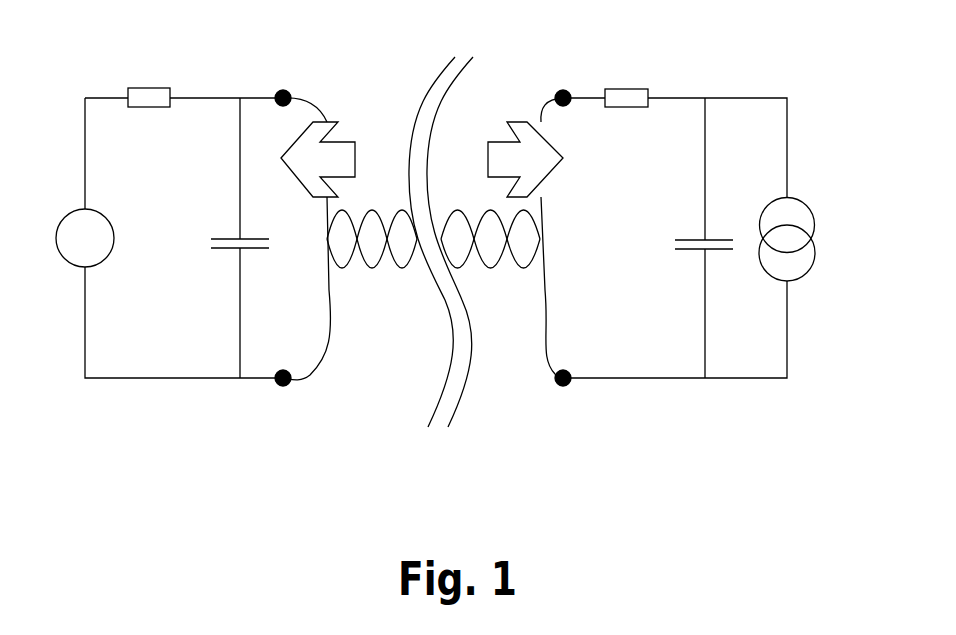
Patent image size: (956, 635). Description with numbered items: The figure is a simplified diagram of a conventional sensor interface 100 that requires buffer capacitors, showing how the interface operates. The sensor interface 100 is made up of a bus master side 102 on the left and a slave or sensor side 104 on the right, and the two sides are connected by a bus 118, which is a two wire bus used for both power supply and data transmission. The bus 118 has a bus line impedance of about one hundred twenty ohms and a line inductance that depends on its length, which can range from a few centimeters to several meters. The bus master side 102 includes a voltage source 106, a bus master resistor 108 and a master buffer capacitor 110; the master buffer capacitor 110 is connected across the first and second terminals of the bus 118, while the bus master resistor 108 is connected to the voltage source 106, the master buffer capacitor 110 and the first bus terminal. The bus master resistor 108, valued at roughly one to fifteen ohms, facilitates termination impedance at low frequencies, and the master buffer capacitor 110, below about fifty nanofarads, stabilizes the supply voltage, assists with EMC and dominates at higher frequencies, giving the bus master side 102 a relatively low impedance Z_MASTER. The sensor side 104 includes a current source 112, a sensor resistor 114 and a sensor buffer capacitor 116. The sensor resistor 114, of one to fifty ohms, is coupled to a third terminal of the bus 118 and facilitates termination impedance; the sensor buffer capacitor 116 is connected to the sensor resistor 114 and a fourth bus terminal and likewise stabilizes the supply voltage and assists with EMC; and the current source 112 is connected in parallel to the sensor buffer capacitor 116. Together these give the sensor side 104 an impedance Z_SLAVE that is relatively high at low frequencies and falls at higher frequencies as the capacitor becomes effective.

The sensor interface 100 is at (205, 535).
The bus master side 102 is at (205, 38).
The sensor side 104 is at (623, 38).
The voltage source 106 is at (72, 265).
The bus master resistor 108 is at (152, 88).
The master buffer capacitor 110 is at (227, 238).
The current source 112 is at (806, 200).
The sensor resistor 114 is at (612, 108).
The sensor buffer capacitor 116 is at (695, 240).
The bus 118 is at (408, 310).